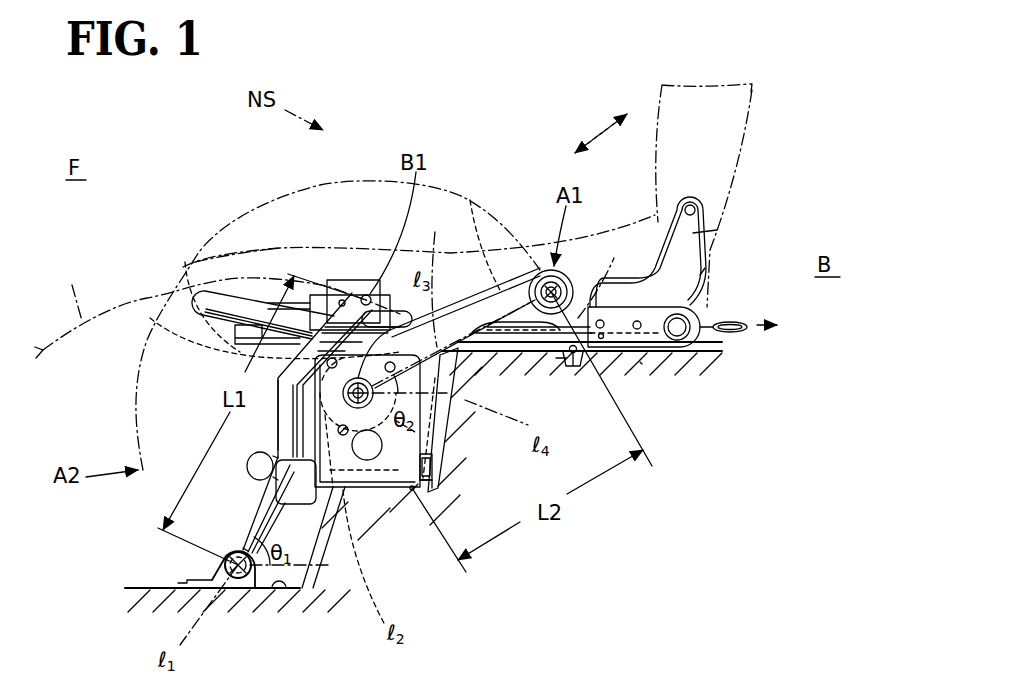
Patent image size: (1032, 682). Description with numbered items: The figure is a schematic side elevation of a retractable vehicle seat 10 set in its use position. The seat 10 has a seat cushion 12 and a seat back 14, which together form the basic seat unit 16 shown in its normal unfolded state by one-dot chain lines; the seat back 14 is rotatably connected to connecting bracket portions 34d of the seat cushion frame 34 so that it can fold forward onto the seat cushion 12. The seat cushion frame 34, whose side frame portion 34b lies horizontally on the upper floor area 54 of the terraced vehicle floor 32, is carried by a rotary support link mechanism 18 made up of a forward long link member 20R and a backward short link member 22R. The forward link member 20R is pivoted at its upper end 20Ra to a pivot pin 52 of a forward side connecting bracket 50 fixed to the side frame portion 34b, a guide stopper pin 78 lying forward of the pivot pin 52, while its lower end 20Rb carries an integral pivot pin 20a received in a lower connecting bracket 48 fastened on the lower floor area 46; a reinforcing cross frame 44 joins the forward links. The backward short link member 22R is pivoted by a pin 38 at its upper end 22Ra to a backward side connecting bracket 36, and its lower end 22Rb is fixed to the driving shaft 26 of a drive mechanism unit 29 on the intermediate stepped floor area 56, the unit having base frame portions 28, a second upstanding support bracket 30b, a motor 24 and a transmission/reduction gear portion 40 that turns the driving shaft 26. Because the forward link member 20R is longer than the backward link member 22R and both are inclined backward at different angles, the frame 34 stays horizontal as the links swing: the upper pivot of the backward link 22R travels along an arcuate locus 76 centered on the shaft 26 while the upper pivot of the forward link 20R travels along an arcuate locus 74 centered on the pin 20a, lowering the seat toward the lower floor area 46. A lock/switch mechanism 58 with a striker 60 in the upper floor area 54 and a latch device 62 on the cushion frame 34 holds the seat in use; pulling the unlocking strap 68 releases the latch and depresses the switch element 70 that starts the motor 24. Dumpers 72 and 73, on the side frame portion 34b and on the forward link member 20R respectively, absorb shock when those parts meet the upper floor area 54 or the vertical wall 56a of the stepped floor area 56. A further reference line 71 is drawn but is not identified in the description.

The seat 10 is at (762, 256).
The seat cushion 12 is at (228, 251).
The seat back 14 is at (758, 109).
The basic seat unit 16 is at (726, 297).
The rotary support link mechanism 18 is at (265, 420).
The first forward long link member 20R is at (268, 378).
The upper end of forward long link member 20Ra is at (327, 249).
The lower end of forward long link member 20Rb is at (222, 548).
The pivot pin 20a is at (238, 580).
The first backward short link member 22R is at (430, 422).
The upper end of backward short link member 22Ra is at (528, 243).
The lower end of backward short link member 22Rb is at (235, 352).
The motor 24 is at (410, 508).
The driving shaft 26 is at (412, 492).
The base frame portion 28 is at (425, 487).
The drive mechanism unit 29 is at (433, 478).
The second upstanding support bracket 30b is at (318, 552).
The vehicle floor 32 is at (132, 585).
The seat cushion frame 34 is at (218, 329).
The side frame portion 34b is at (458, 328).
The connecting bracket portion 34d is at (701, 232).
The backward side connecting bracket 36 is at (514, 282).
The pin 38 is at (558, 270).
The transmission/reduction gear portion 40 is at (430, 443).
The reinforcing cross frame 44 is at (250, 470).
The lower floor area 46 is at (288, 598).
The lower connecting bracket 48 is at (187, 585).
The forward side connecting bracket 50 is at (378, 292).
The pivot pin 52 is at (362, 296).
The upper floor area 54 is at (704, 368).
The intermediate stepped floor area 56 is at (383, 488).
The vertical wall 56a is at (287, 594).
The lock/switch mechanism 58 is at (571, 370).
The striker 60 is at (578, 364).
The latch device 62 is at (560, 360).
The unlocking strap 68 is at (737, 333).
The switch element 70 is at (606, 278).
The reference axis 71 is at (436, 278).
The dumper 72 is at (642, 362).
The dumper 73 is at (250, 505).
The arcuate locus 74 is at (217, 309).
The arcuate locus 76 is at (473, 215).
The guide stopper pin 78 is at (340, 300).